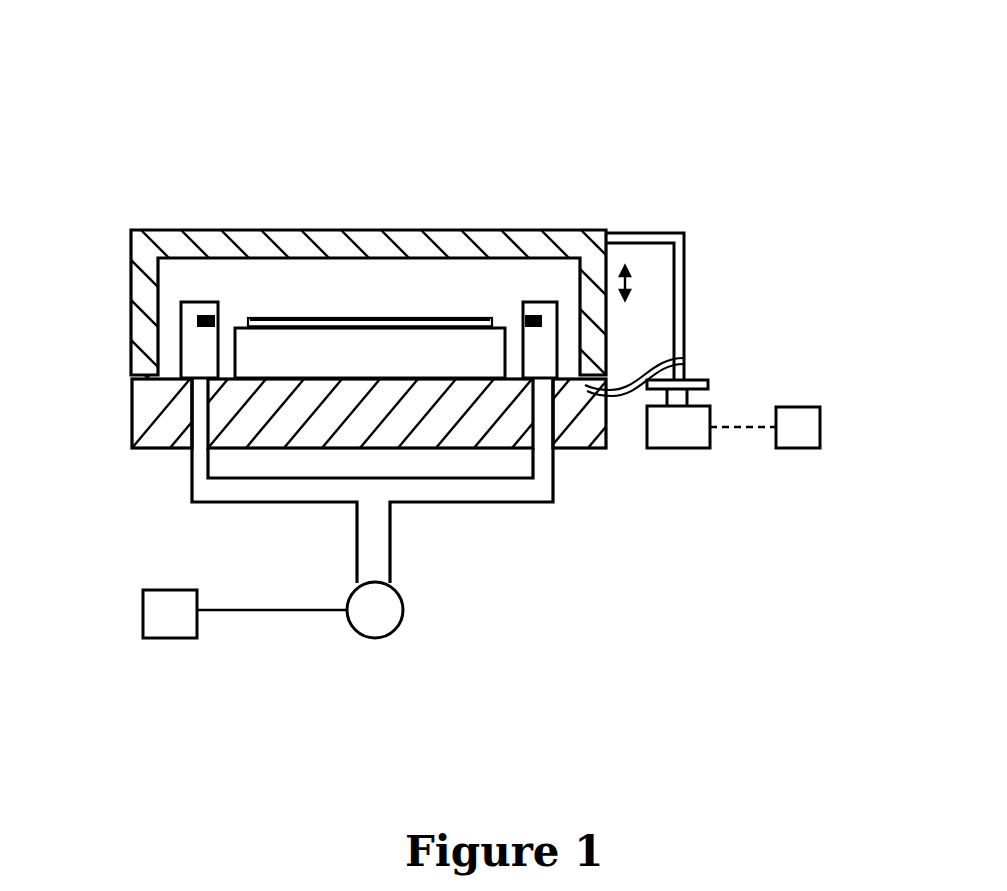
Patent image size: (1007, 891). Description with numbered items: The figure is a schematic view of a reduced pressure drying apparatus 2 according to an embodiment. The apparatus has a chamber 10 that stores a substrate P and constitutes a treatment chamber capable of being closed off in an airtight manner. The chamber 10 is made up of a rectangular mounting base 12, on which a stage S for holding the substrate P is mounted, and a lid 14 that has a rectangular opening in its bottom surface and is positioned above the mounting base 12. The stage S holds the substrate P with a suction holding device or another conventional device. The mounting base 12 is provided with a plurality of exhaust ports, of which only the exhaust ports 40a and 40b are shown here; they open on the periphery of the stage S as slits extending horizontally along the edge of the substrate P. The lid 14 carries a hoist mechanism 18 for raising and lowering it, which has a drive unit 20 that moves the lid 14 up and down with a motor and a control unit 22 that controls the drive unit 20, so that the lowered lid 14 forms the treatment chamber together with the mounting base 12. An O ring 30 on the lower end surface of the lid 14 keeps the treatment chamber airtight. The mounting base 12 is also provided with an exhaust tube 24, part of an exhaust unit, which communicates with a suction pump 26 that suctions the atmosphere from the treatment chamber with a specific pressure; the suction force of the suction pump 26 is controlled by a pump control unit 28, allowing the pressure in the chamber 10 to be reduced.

The reduced pressure drying apparatus 2 is at (273, 160).
The chamber 10 is at (147, 213).
The mounting base 12 is at (570, 433).
The lid 14 is at (130, 258).
The hoist mechanism 18 is at (703, 256).
The drive unit 20 is at (697, 432).
The control unit 22 is at (805, 418).
The exhaust tube 24 is at (395, 535).
The suction pump 26 is at (398, 618).
The pump control unit 28 is at (177, 638).
The O ring 30 is at (684, 358).
The exhaust port 40a is at (195, 300).
The exhaust port 40b is at (535, 300).
The stage S is at (243, 325).
The substrate P is at (362, 318).